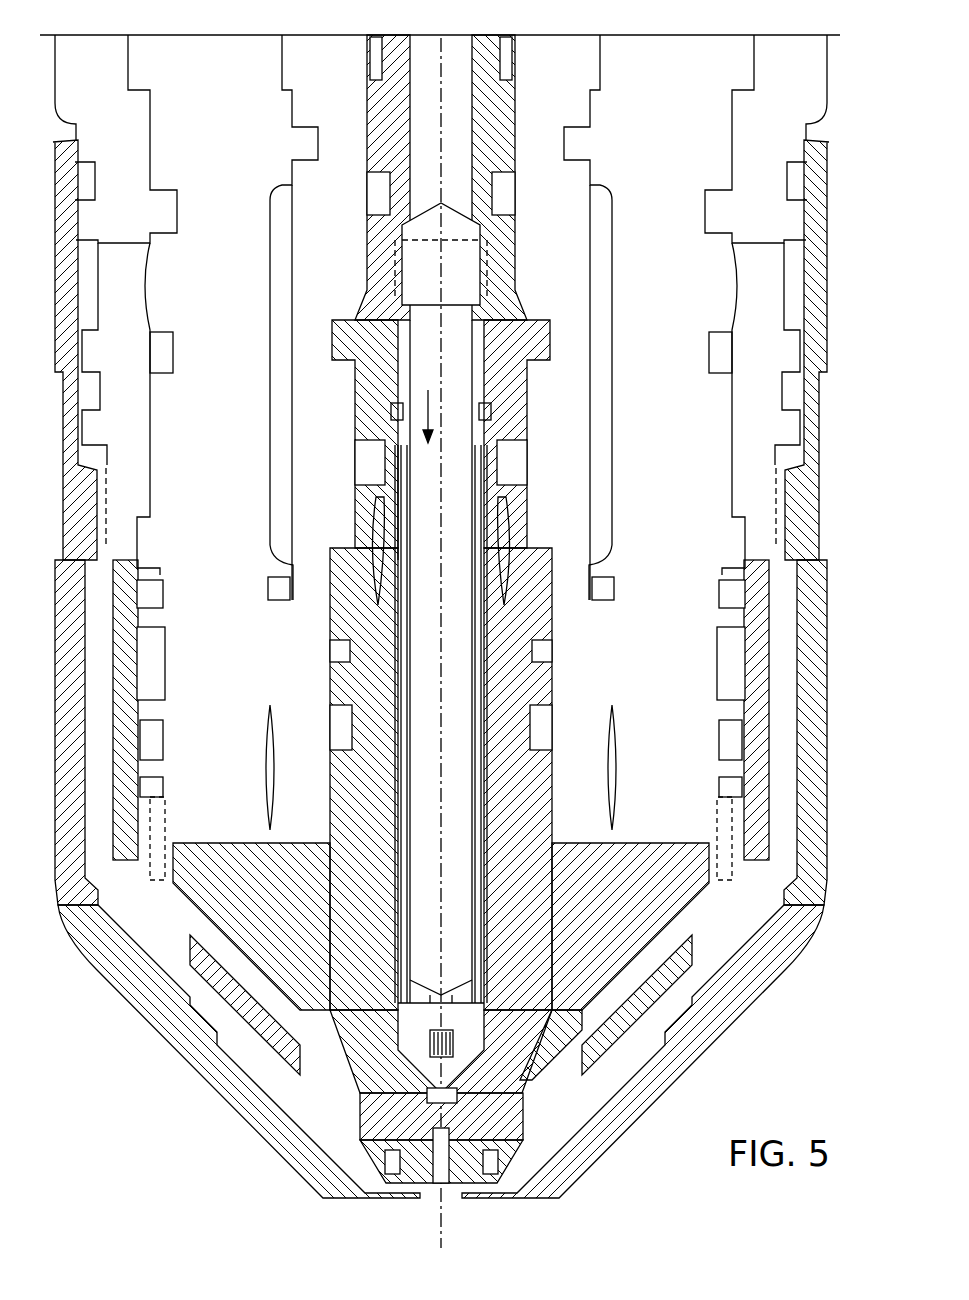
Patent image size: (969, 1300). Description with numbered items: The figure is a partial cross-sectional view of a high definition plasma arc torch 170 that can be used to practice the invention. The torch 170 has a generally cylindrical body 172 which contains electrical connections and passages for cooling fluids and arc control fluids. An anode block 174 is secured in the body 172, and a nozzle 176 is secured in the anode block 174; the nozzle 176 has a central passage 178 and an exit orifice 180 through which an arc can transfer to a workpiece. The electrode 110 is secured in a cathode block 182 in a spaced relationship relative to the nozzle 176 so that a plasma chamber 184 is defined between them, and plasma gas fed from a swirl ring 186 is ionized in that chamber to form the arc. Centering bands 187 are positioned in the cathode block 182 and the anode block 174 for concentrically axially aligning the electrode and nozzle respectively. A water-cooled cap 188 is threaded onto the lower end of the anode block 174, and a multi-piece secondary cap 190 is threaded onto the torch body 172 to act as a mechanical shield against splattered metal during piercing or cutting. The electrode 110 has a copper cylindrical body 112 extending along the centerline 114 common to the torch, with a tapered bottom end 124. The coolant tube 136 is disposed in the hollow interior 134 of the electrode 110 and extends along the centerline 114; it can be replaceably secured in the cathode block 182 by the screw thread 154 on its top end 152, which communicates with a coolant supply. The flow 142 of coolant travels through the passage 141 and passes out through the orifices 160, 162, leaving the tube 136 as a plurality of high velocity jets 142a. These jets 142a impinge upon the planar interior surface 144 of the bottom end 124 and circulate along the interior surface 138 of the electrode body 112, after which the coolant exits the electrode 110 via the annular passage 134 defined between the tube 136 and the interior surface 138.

The electrode 110 is at (342, 566).
The cylindrical body 112 is at (408, 718).
The centerline 114 is at (440, 52).
The bottom end 124 is at (340, 1045).
The hollow interior 134 is at (402, 690).
The coolant tube 136 is at (441, 612).
The interior surface 138 is at (397, 658).
The coolant passage 141 is at (418, 467).
The flow of coolant 142 is at (432, 404).
The high velocity jets 142a is at (460, 990).
The planar interior surface 144 is at (416, 1020).
The top end 152 is at (492, 348).
The mounting mechanism 154 is at (490, 320).
The orifice 160 is at (505, 1062).
The orifice 162 is at (520, 1035).
The plasma arc torch 170 is at (822, 470).
The torch body 172 is at (826, 100).
The anode block 174 is at (770, 898).
The nozzle 176 is at (428, 1185).
The central passage 178 is at (458, 1100).
The exit orifice 180 is at (450, 1183).
The cathode block 182 is at (490, 260).
The plasma chamber 184 is at (405, 1105).
The swirl ring 186 is at (342, 798).
The centering bands 187 is at (540, 592).
The water-cooled cap 188 is at (632, 1032).
The secondary cap 190 is at (758, 997).